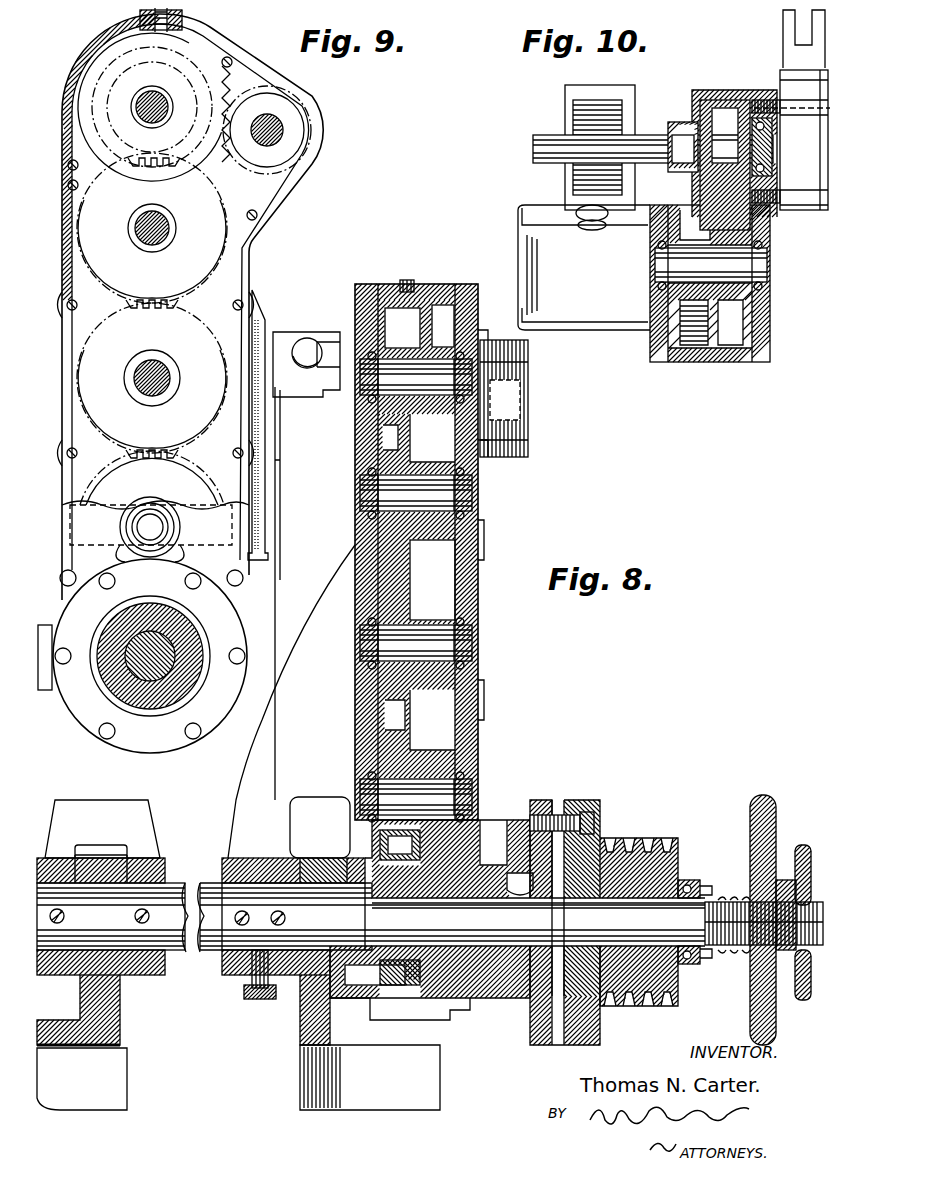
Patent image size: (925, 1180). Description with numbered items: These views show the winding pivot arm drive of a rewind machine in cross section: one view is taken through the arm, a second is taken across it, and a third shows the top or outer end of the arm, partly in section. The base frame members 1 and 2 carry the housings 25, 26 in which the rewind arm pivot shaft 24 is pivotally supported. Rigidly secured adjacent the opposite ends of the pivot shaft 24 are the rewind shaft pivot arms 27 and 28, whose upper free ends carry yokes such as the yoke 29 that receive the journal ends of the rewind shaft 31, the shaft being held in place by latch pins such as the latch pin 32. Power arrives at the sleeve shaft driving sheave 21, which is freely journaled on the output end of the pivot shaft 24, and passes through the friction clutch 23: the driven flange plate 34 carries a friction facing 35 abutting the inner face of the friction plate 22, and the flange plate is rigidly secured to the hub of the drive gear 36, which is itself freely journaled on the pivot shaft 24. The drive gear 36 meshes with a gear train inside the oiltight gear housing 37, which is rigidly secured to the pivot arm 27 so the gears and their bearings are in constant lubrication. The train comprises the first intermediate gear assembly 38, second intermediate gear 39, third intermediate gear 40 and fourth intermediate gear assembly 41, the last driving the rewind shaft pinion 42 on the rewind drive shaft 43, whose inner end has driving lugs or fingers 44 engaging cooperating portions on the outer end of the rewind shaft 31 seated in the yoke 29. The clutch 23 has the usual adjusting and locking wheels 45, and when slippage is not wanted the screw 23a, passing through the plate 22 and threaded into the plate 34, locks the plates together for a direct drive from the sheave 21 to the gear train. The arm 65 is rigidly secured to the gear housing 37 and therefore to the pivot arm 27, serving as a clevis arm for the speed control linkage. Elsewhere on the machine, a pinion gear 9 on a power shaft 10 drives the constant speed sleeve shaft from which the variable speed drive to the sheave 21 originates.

In FIG. 8, the right hand base frame member 1 is at (300, 1075).
In FIG. 8, the left hand base frame member 2 is at (118, 1076).
In FIG. 8, the pinion gear 9 is at (465, 647).
In FIG. 9, the shaft 10 is at (183, 131).
In FIG. 8, the sleeve shaft driving sheave 21 is at (682, 862).
In FIG. 8, the friction plate 22 is at (562, 800).
In FIG. 8, the friction clutch 23 is at (552, 794).
In FIG. 8, the screw 23a is at (598, 814).
In FIG. 9, the rewind arm pivot shaft 24 is at (150, 645).
In FIG. 8, the rewind arm pivot shaft 24 is at (430, 941).
In FIG. 8, the housing 25 is at (300, 1011).
In FIG. 8, the housing 26 is at (122, 1004).
In FIG. 9, the rewind shaft pivot arm 27 is at (240, 778).
In FIG. 10, the rewind shaft pivot arm 27 is at (545, 210).
In FIG. 8, the rewind shaft pivot arm 28 is at (98, 815).
In FIG. 10, the yoke 29 is at (570, 88).
In FIG. 10, the rewind shaft 31 is at (540, 142).
In FIG. 9, the latch pin 32 is at (307, 340).
In FIG. 10, the latch pin 32 is at (596, 230).
In FIG. 8, the driven flange plate 34 is at (538, 805).
In FIG. 8, the friction facing 35 is at (548, 1045).
In FIG. 9, the drive gear 36 is at (150, 702).
In FIG. 8, the drive gear 36 is at (412, 998).
In FIG. 9, the gear housing 37 is at (233, 48).
In FIG. 8, the gear housing 37 is at (478, 578).
In FIG. 10, the gear housing 37 is at (770, 332).
In FIG. 9, the first intermediate gear assembly 38 is at (95, 487).
In FIG. 8, the first intermediate gear assembly 38 is at (410, 735).
In FIG. 9, the second intermediate gear 39 is at (95, 363).
In FIG. 8, the second intermediate gear 39 is at (410, 596).
In FIG. 9, the third intermediate gear 40 is at (215, 242).
In FIG. 8, the third intermediate gear 40 is at (410, 556).
In FIG. 9, the fourth intermediate gear assembly 41 is at (98, 64).
In FIG. 8, the fourth intermediate gear assembly 41 is at (430, 312).
In FIG. 10, the fourth intermediate gear assembly 41 is at (730, 340).
In FIG. 9, the rewind shaft pinion 42 is at (285, 104).
In FIG. 10, the rewind shaft pinion 42 is at (732, 112).
In FIG. 9, the rewind drive shaft 43 is at (275, 145).
In FIG. 10, the rewind drive shaft 43 is at (770, 150).
In FIG. 10, the driving lugs or fingers 44 is at (678, 128).
In FIG. 8, the adjusting and locking wheels 45 is at (795, 860).
In FIG. 8, the arm 65 is at (528, 413).
In FIG. 10, the arm 65 is at (783, 40).